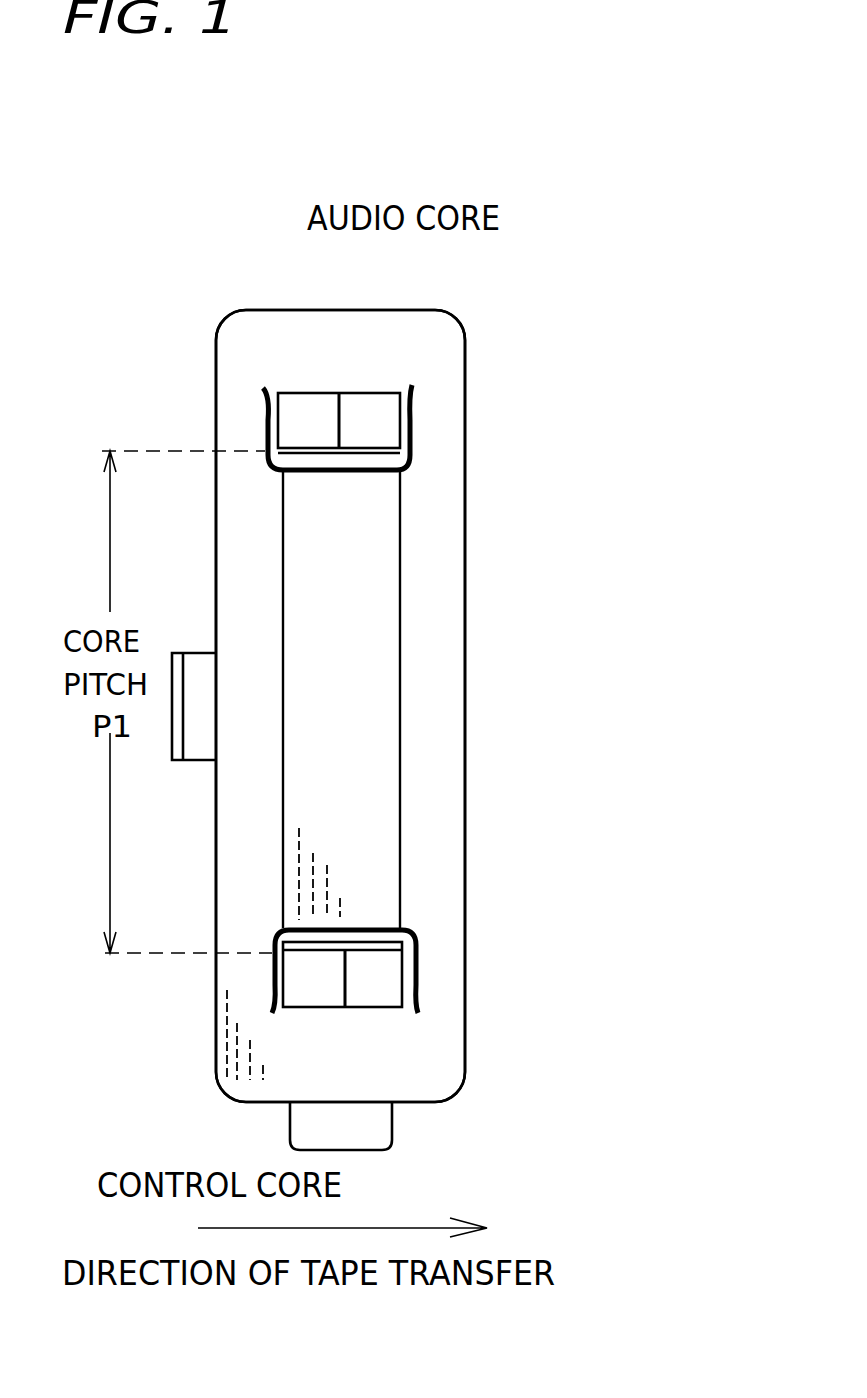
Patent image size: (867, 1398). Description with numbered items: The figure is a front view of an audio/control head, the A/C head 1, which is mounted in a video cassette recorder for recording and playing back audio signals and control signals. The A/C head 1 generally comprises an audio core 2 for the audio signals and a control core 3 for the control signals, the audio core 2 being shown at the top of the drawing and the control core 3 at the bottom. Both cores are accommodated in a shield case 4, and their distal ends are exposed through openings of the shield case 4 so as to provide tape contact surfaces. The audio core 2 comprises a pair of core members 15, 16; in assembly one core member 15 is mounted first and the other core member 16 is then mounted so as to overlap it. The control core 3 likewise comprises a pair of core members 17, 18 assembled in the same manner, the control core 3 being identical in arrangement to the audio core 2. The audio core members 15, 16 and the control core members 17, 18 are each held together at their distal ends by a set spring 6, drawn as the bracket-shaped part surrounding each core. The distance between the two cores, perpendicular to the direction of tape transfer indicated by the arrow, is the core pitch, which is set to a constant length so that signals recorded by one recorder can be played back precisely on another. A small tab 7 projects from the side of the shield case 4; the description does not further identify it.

The A/C head 1 is at (454, 172).
The audio core 2 is at (347, 358).
The control core 3 is at (349, 1046).
The shield case 4 is at (218, 360).
The set springs 6 is at (407, 460).
The mounting tab 7 is at (198, 752).
The core member 15 is at (305, 407).
The core member 16 is at (378, 405).
The core member 17 is at (317, 992).
The core member 18 is at (377, 993).